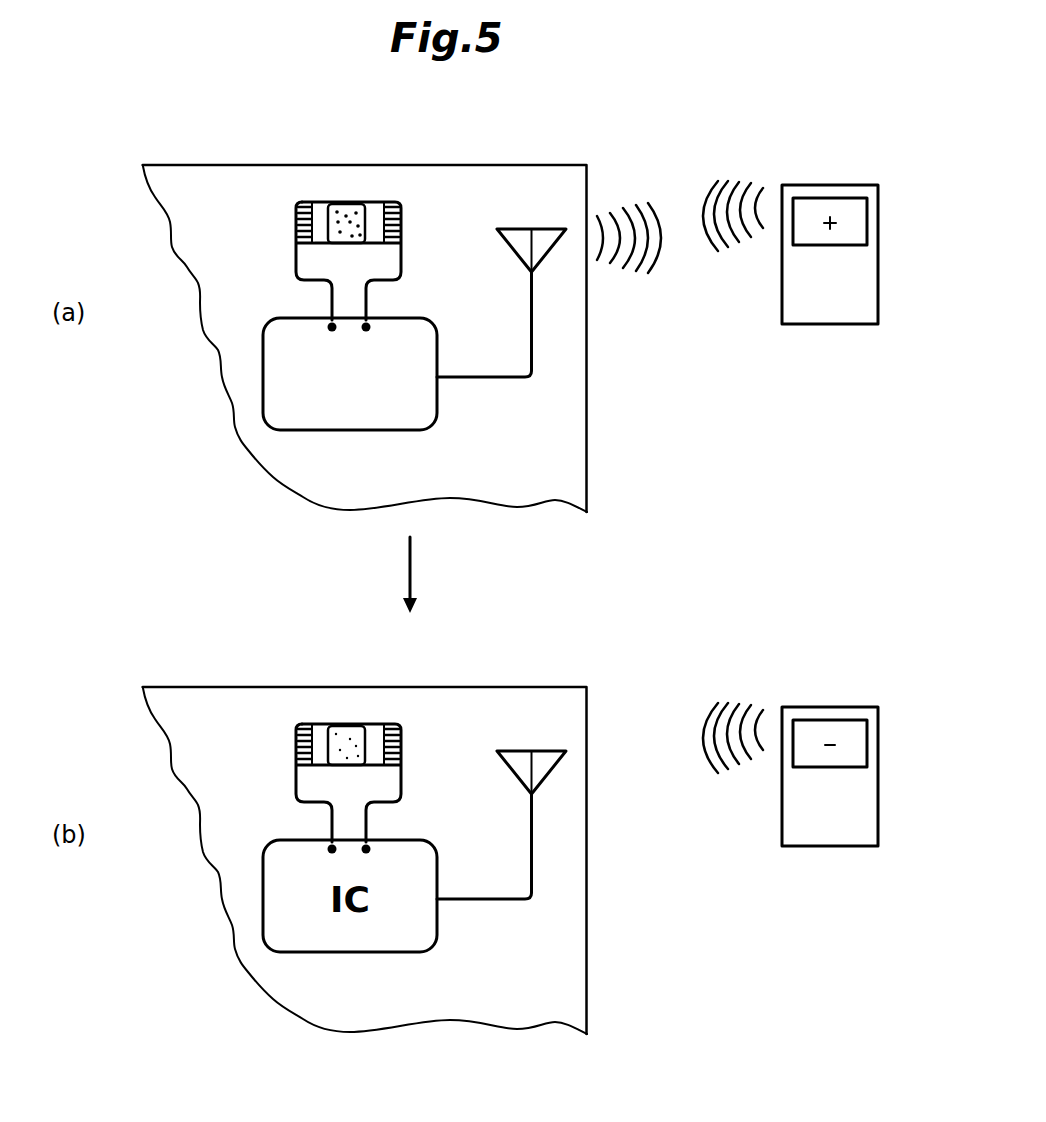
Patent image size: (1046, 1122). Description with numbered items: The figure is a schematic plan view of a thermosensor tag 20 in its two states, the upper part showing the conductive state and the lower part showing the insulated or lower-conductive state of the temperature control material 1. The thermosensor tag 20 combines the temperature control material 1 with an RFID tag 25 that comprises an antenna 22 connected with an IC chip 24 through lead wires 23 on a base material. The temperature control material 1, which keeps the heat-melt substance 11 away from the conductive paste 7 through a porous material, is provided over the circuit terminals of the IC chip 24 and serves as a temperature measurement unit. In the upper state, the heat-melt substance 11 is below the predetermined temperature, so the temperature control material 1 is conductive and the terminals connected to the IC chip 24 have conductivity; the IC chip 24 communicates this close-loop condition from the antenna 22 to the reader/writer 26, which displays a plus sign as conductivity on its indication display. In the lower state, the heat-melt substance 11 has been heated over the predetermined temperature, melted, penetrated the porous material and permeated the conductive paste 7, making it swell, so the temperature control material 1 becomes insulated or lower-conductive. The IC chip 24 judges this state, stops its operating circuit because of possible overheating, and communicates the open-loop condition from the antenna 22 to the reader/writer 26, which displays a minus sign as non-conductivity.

The temperature control material 1 is at (288, 222).
The conductive paste 7 is at (325, 208).
The heat-melt substance 11 is at (352, 210).
The thermosensor tag 20 is at (551, 531).
The antenna 22 is at (515, 252).
The lead wires 23 is at (378, 280).
The IC chip 24 is at (357, 432).
The RFID tag 25 is at (587, 393).
The reader/writer 26 is at (840, 305).